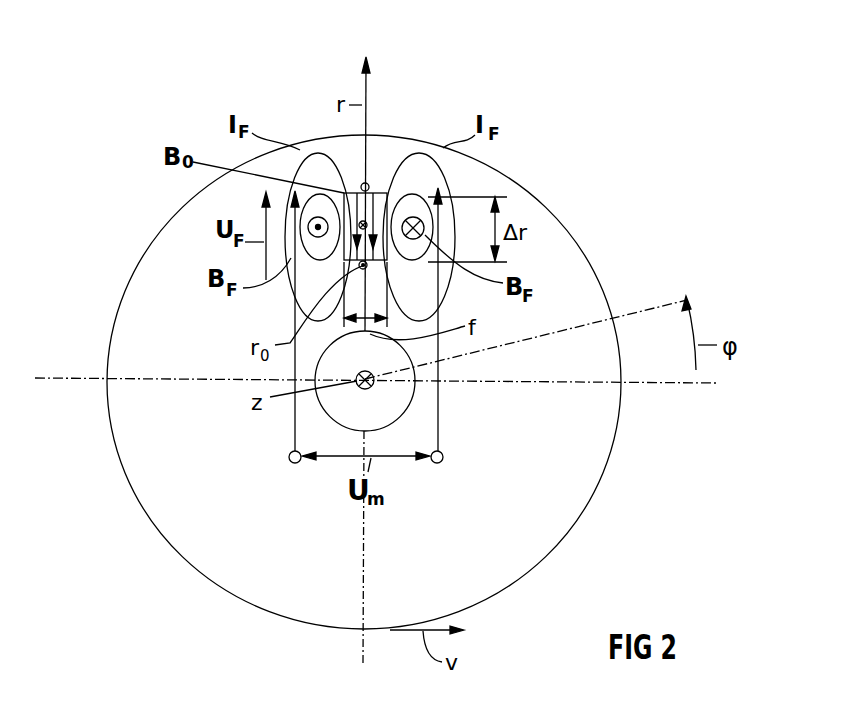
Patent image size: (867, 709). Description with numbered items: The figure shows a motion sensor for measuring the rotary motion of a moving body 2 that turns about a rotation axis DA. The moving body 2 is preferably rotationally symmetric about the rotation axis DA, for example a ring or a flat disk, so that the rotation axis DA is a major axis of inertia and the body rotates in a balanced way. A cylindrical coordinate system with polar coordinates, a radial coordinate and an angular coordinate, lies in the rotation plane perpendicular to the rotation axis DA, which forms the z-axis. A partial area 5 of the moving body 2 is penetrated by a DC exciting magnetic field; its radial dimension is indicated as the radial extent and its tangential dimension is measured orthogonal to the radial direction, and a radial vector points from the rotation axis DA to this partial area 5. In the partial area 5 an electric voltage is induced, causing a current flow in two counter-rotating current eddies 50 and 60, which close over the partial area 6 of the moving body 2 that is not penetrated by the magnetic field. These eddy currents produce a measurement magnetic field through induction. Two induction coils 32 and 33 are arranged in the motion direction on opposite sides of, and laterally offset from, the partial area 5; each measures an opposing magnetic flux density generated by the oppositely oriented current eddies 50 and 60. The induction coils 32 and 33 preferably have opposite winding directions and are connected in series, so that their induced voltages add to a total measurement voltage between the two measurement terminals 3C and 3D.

The moving body 2 is at (565, 510).
The partial area 5 is at (370, 184).
The partial area 6 is at (162, 455).
The induction coil 32 is at (323, 236).
The induction coil 33 is at (477, 189).
The current eddy 50 is at (418, 152).
The current eddy 60 is at (306, 152).
The measurement terminal 3C is at (291, 462).
The measurement terminal 3D is at (440, 463).
The rotation axis DA is at (372, 383).